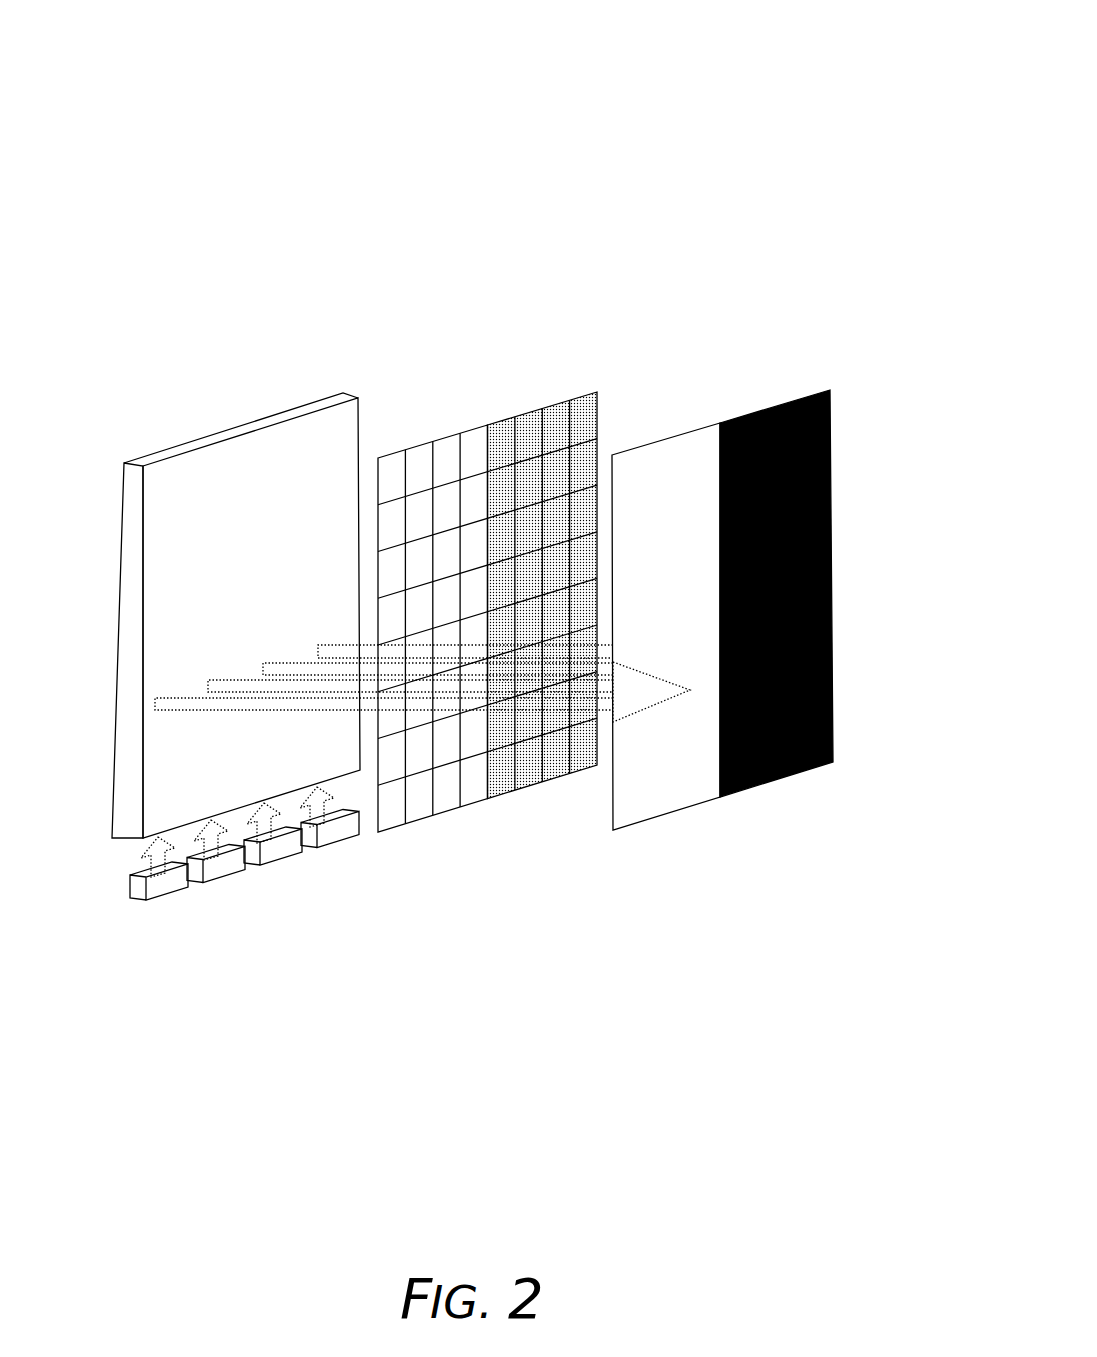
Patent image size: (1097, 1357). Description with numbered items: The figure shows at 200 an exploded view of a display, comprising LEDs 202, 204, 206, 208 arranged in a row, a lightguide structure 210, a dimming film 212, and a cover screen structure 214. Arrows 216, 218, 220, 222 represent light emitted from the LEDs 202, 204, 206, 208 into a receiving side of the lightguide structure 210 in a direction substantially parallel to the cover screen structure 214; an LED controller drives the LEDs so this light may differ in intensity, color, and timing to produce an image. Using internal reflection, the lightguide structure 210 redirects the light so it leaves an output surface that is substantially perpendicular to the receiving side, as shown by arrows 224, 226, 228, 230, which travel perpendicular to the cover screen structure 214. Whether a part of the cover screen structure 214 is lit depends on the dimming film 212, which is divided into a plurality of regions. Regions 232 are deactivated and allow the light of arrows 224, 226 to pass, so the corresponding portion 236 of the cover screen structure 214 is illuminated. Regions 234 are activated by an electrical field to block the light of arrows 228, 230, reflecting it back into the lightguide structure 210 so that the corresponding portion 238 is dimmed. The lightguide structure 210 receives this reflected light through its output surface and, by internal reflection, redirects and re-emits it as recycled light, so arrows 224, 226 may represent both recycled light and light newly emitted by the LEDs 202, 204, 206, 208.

The exploded view of a display 200 is at (686, 76).
The LED 202 is at (167, 883).
The LED 204 is at (220, 865).
The LED 206 is at (275, 849).
The LED 208 is at (332, 828).
The lightguide structure 210 is at (229, 408).
The dimming film 212 is at (518, 624).
The cover screen structure 214 is at (736, 616).
The arrow 216 is at (157, 853).
The arrow 218 is at (210, 830).
The arrow 220 is at (267, 805).
The arrow 222 is at (323, 787).
The arrow 224 is at (183, 705).
The arrow 226 is at (237, 687).
The arrow 228 is at (305, 672).
The arrow 230 is at (367, 652).
The regions 232 is at (422, 797).
The regions 234 is at (532, 765).
The portion 236 is at (665, 785).
The portion 238 is at (767, 780).